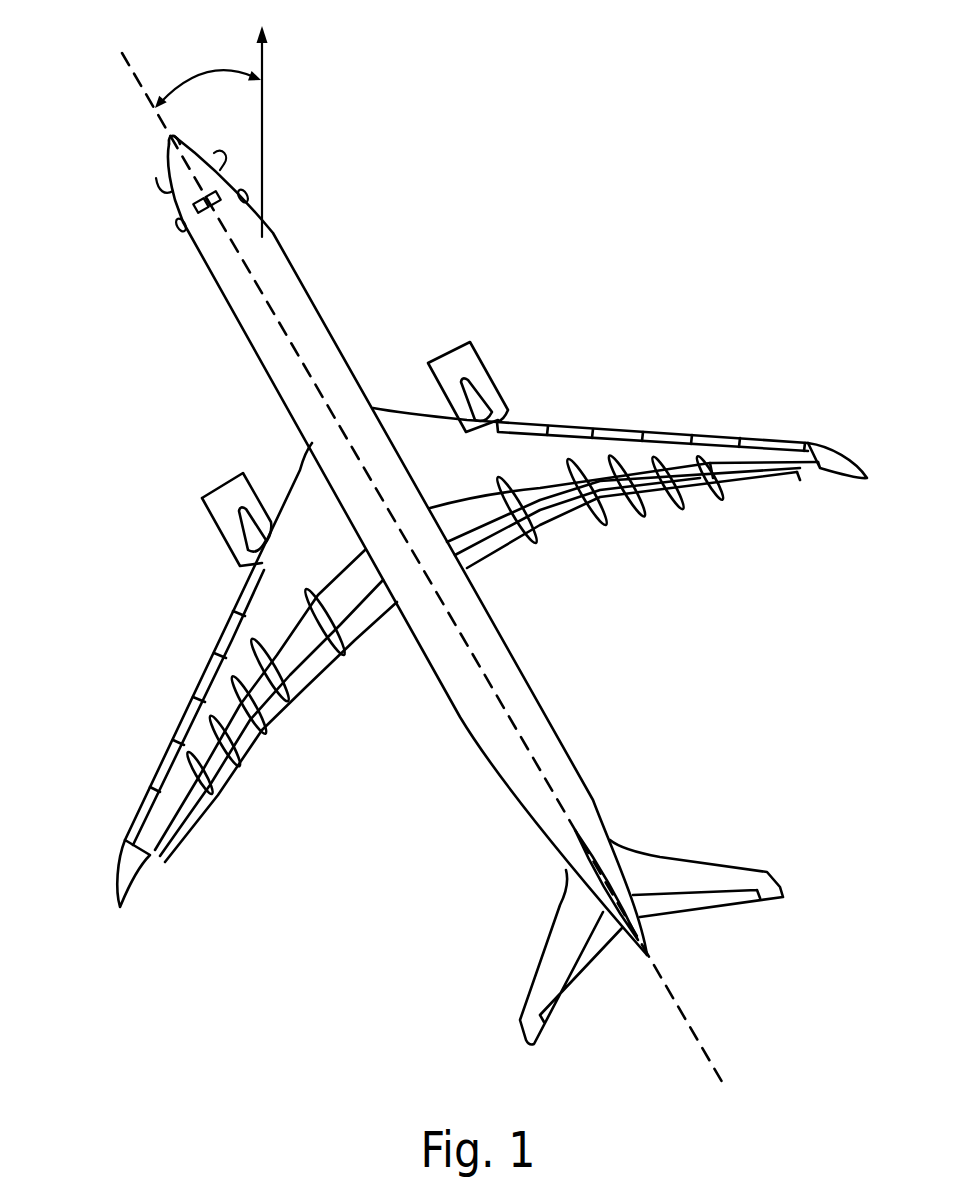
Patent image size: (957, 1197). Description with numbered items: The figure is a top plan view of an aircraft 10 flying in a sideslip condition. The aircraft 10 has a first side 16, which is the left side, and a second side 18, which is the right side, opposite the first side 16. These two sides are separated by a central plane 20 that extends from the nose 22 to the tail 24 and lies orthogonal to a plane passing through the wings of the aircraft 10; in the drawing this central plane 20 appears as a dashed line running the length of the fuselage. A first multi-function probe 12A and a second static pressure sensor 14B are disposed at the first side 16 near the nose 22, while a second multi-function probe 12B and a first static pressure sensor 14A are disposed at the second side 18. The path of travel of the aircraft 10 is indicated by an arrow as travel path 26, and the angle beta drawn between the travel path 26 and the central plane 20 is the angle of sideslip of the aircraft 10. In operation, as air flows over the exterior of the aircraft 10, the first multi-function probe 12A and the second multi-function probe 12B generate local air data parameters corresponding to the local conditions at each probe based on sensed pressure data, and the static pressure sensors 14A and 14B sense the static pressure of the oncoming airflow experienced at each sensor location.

The aircraft 10 is at (465, 570).
The first multi-function probe 12A is at (155, 183).
The second multi-function probe 12B is at (222, 158).
The first static pressure sensor 14A is at (245, 203).
The second static pressure sensor 14B is at (180, 228).
The first side 16 is at (212, 309).
The second side 18 is at (344, 331).
The central plane 20 is at (323, 401).
The nose 22 is at (160, 135).
The tail 24 is at (623, 954).
The travel path 26 is at (264, 58).